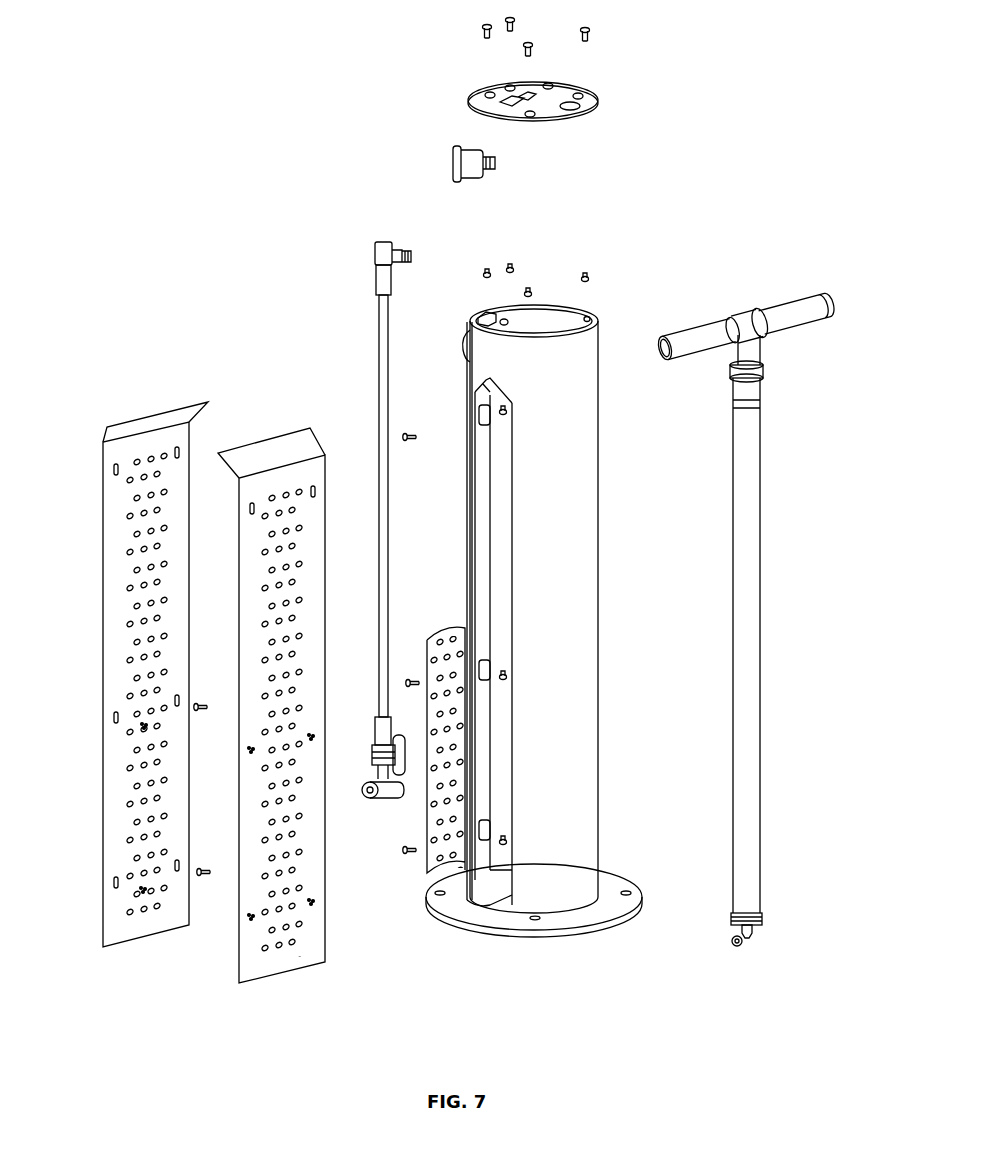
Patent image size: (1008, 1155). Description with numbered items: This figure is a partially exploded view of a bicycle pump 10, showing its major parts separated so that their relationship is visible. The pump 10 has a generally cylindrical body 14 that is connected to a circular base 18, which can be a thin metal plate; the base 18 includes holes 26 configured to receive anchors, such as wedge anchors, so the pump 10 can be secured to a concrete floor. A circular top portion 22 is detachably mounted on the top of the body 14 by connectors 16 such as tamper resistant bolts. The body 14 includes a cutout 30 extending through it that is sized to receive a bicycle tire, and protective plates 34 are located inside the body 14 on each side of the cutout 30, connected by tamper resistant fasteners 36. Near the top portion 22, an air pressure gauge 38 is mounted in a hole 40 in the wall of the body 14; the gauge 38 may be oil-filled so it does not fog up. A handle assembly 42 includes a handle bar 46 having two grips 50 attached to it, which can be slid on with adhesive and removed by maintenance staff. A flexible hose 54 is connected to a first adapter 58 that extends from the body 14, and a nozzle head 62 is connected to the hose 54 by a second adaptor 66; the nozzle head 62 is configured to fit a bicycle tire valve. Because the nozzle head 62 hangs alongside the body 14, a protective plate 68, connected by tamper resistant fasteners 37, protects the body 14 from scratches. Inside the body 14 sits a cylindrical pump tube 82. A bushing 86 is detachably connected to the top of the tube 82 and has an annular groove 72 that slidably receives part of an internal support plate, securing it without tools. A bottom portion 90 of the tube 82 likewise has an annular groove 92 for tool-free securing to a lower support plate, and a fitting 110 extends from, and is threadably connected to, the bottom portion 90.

The bicycle pump 10 is at (792, 640).
The body 14 is at (586, 602).
The base 18 is at (600, 913).
The holes 26 is at (626, 888).
The top portion 22 is at (546, 110).
The connectors 16 is at (590, 42).
The air pressure gauge 38 is at (453, 166).
The first adapter 58 is at (375, 250).
The flexible hose 54 is at (380, 372).
The second adaptor 66 is at (374, 756).
The nozzle head 62 is at (374, 800).
The hole 40 is at (466, 348).
The cutout 30 is at (496, 484).
The protective plate 68 is at (435, 640).
The protective plates 34 is at (118, 805).
The tamper resistant fasteners 36 is at (136, 893).
The tamper resistant fasteners 37 is at (410, 868).
The grips 50 is at (830, 306).
The handle bar 46 is at (752, 312).
The handle assembly 42 is at (766, 347).
The bushing 86 is at (762, 386).
The pump tube 82 is at (752, 558).
The annular groove 72 is at (733, 402).
The bottom portion 90 is at (763, 920).
The annular groove 92 is at (749, 912).
The fitting 110 is at (745, 947).